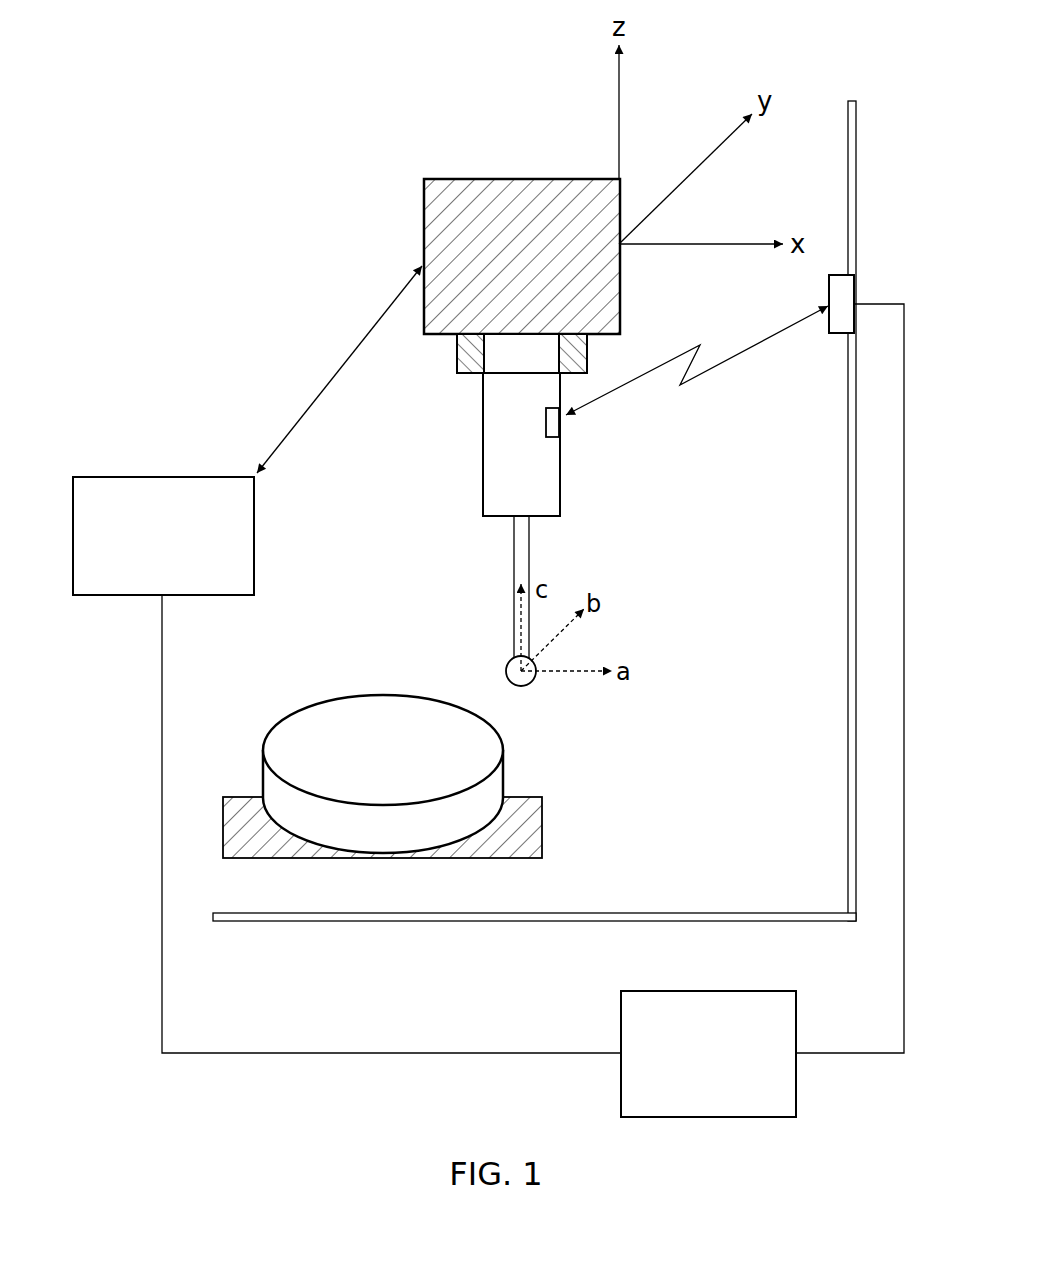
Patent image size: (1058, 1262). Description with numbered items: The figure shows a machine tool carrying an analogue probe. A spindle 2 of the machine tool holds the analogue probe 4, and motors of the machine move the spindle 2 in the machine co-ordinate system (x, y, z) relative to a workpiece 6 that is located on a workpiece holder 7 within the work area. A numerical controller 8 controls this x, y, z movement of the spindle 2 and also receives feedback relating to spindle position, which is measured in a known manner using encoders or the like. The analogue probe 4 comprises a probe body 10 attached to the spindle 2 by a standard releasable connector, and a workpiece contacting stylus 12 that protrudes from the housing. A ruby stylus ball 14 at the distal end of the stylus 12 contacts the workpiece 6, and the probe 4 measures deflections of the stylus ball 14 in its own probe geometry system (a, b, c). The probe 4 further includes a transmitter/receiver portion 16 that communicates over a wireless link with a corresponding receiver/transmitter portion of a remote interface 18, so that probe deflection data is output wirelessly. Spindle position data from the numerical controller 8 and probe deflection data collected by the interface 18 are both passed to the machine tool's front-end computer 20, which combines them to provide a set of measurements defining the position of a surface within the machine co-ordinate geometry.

The spindle 2 is at (489, 178).
The analogue probe 4 is at (532, 425).
The workpiece 6 is at (374, 763).
The workpiece holder 7 is at (544, 839).
The numerical controller 8 is at (151, 552).
The probe body 10 is at (505, 487).
The stylus 12 is at (518, 537).
The stylus ball 14 is at (526, 683).
The transmitter/receiver portion 16 is at (556, 424).
The remote interface 18 is at (846, 297).
The front-end computer 20 is at (690, 1070).